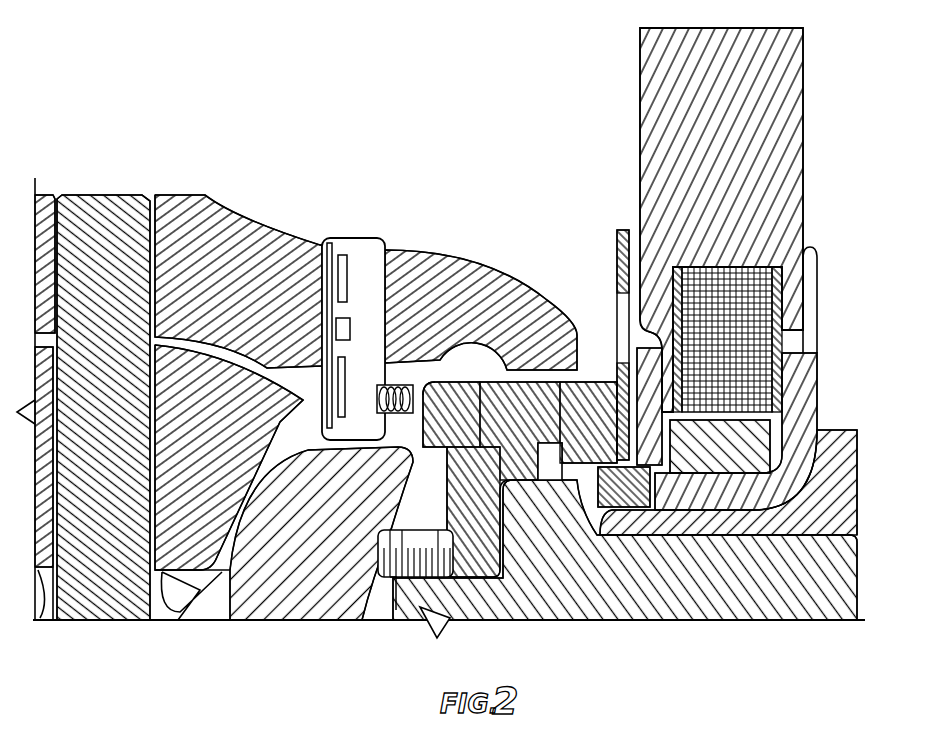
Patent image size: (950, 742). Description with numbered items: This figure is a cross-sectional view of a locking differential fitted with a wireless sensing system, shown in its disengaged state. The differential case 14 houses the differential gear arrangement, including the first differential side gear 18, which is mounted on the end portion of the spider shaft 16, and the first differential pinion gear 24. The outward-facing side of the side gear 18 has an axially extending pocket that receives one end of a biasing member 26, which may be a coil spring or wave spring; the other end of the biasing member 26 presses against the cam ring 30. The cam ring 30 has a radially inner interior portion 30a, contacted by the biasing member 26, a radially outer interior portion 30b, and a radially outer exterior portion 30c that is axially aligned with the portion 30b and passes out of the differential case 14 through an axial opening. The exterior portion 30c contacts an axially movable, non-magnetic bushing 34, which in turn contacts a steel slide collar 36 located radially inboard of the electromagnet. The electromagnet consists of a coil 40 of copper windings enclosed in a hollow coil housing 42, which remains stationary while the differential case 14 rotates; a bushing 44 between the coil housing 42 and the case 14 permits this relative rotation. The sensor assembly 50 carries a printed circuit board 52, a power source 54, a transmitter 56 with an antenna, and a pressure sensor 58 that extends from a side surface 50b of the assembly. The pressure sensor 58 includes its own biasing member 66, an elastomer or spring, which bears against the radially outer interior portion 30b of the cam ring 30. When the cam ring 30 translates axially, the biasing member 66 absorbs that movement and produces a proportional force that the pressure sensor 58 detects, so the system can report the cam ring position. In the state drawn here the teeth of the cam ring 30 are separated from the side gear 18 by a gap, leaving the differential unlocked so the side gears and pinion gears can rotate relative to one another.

The differential case 14 is at (220, 297).
The spider shaft 16 is at (678, 595).
The first differential side gear 18 is at (310, 522).
The first differential pinion gear 24 is at (182, 474).
The biasing member 26 is at (410, 565).
The cam ring 30 is at (502, 438).
The radially inner interior portion 30a is at (457, 495).
The radially outer interior portion 30b is at (437, 420).
The radially outer exterior portion 30c is at (563, 425).
The bushing 34 is at (615, 500).
The slide collar 36 is at (705, 460).
The coil 40 is at (707, 337).
The coil housing 42 is at (778, 326).
The bushing 44 is at (636, 392).
The sensor assembly 50 is at (351, 300).
The side surface 50b is at (372, 540).
The printed circuit board 52 is at (330, 316).
The power source 54 is at (343, 256).
The transmitter 56 is at (342, 318).
The pressure sensor 58 is at (395, 383).
The biasing member 66 is at (416, 387).